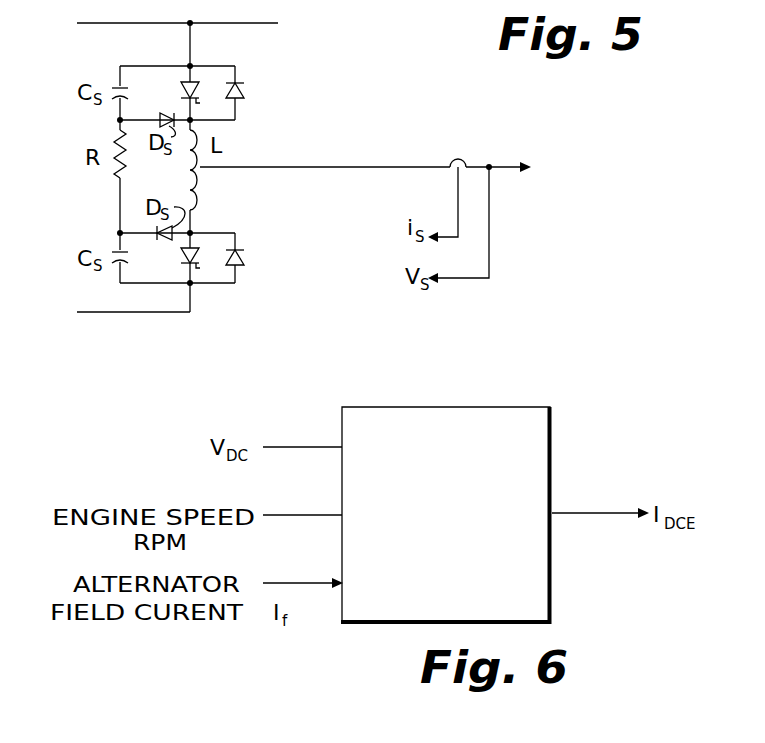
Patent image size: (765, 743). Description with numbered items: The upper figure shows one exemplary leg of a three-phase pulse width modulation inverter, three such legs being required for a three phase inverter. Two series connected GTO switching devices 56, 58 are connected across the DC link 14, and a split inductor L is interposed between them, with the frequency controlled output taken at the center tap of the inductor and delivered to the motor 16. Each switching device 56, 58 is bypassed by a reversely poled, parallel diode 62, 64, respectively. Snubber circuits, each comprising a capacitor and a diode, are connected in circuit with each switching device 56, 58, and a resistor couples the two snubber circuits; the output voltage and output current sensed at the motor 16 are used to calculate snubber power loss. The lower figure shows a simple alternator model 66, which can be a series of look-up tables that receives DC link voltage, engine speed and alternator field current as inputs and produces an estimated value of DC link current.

In FIG. 5, the DC link 14 is at (253, 4).
In FIG. 5, the motor 16 is at (460, 167).
In FIG. 5, the switching device 56 is at (197, 93).
In FIG. 5, the switching device 58 is at (198, 257).
In FIG. 5, the diode 62 is at (244, 91).
In FIG. 5, the diode 64 is at (244, 258).
In FIG. 6, the alternator model 66 is at (552, 446).